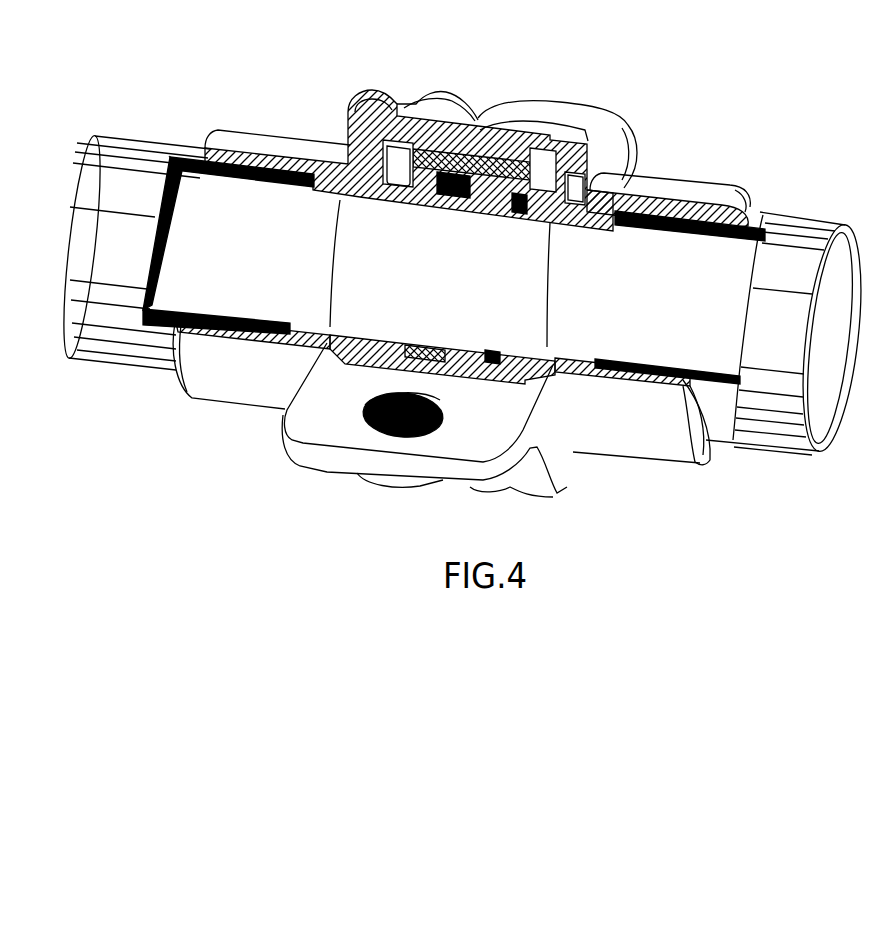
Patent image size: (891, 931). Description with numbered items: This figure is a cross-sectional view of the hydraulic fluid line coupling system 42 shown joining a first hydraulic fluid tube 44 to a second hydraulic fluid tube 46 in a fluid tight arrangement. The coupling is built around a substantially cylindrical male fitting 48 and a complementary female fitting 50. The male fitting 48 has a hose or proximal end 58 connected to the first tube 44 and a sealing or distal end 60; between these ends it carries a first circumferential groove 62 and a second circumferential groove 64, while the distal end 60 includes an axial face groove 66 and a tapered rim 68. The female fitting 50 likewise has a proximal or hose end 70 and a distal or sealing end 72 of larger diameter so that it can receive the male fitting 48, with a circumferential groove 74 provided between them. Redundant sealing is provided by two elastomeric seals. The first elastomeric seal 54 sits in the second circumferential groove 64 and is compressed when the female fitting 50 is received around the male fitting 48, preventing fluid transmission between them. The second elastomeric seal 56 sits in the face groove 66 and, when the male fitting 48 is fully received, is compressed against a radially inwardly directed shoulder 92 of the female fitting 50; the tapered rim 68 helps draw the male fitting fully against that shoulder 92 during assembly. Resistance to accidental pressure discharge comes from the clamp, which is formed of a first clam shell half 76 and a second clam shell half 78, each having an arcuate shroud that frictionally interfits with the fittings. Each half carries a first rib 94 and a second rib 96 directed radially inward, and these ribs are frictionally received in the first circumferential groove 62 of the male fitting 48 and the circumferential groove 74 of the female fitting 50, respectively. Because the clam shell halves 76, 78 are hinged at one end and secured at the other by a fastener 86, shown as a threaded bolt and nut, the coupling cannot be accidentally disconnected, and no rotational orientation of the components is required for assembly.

The hydraulic fluid line coupling system 42 is at (682, 63).
The first hydraulic fluid tube 44 is at (112, 164).
The second hydraulic fluid tube 46 is at (810, 220).
The male fitting 48 is at (250, 138).
The female fitting 50 is at (677, 180).
The first elastomeric seal 54 is at (398, 153).
The second elastomeric seal 56 is at (547, 221).
The proximal end 58 is at (278, 163).
The distal end 60 is at (522, 214).
The first circumferential groove 62 is at (373, 177).
The second circumferential groove 64 is at (463, 195).
The face groove 66 is at (512, 202).
The tapered rim 68 is at (510, 153).
The proximal end 70 is at (715, 221).
The distal end 72 is at (418, 100).
The circumferential groove 74 is at (572, 182).
The first clam shell half 76 is at (545, 132).
The second clam shell half 78 is at (488, 418).
The fastener 86 is at (375, 433).
The shoulder 92 is at (540, 350).
The first rib 94 is at (337, 343).
The second rib 96 is at (573, 360).